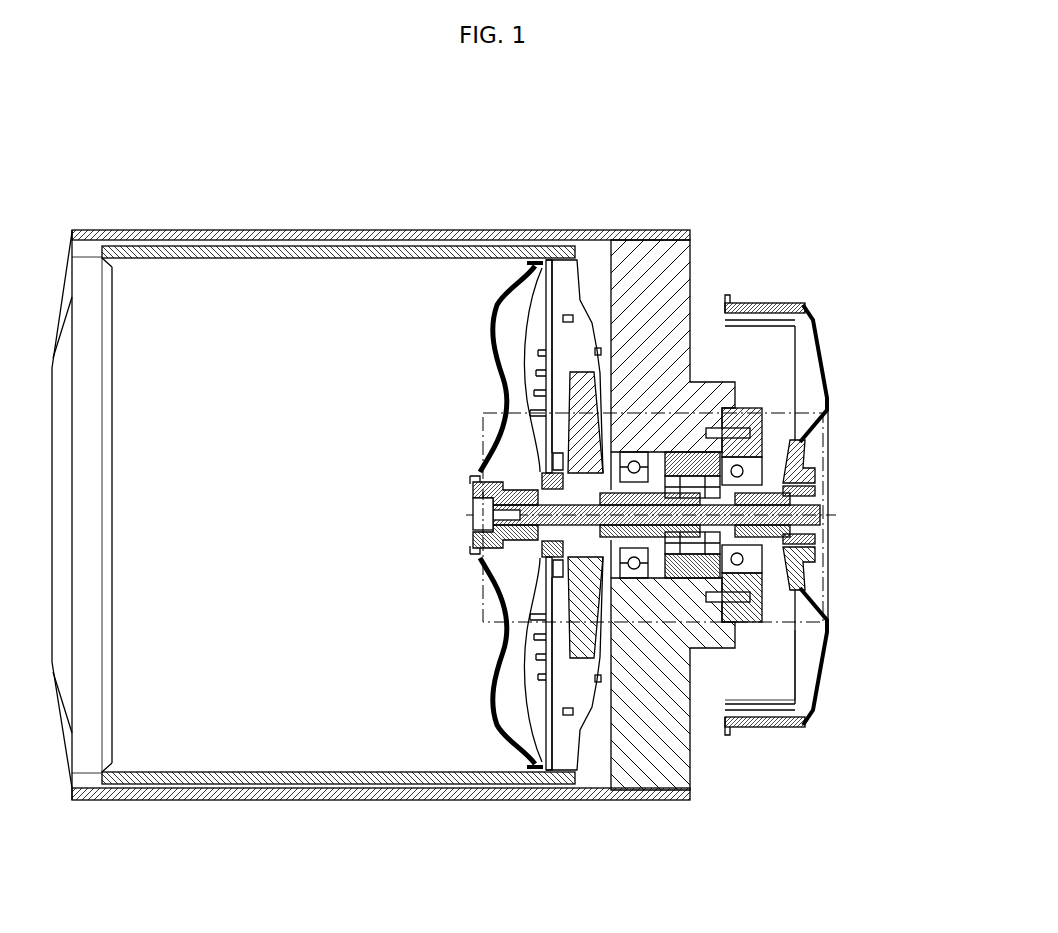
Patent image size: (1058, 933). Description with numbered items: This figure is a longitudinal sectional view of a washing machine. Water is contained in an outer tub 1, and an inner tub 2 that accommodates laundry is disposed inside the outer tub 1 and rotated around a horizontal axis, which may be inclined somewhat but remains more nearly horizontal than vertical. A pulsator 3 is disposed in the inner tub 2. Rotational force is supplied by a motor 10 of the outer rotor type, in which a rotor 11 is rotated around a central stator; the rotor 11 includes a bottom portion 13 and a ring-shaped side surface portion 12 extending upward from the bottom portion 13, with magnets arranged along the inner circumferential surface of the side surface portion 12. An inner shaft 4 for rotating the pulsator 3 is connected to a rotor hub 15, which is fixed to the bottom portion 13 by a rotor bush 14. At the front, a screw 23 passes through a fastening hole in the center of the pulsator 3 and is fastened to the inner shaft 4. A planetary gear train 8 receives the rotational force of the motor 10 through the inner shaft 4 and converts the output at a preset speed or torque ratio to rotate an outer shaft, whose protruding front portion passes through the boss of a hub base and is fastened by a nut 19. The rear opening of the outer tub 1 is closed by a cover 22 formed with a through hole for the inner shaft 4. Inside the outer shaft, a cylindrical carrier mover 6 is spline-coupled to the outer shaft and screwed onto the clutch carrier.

The outer tub 1 is at (286, 232).
The inner tub 2 is at (214, 248).
The pulsator 3 is at (504, 297).
The nut 19 is at (552, 440).
The carrier mover 6 is at (636, 455).
The cover 22 is at (738, 436).
The screw 23 is at (476, 514).
The rotor 11 is at (808, 305).
The side surface portion 12 is at (764, 303).
The bottom portion 13 is at (807, 352).
The motor 10 is at (842, 416).
The rotor hub 15 is at (812, 479).
The rotor bush 14 is at (815, 492).
The inner shaft 4 is at (808, 562).
The planetary gear train 8 is at (780, 680).